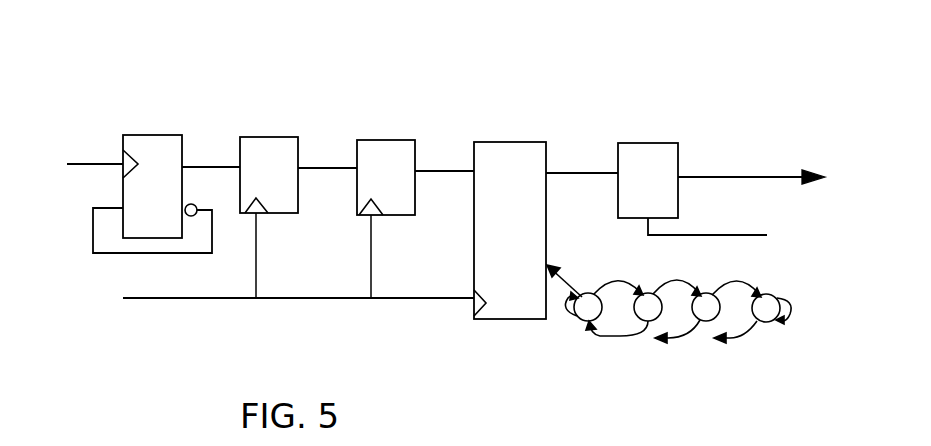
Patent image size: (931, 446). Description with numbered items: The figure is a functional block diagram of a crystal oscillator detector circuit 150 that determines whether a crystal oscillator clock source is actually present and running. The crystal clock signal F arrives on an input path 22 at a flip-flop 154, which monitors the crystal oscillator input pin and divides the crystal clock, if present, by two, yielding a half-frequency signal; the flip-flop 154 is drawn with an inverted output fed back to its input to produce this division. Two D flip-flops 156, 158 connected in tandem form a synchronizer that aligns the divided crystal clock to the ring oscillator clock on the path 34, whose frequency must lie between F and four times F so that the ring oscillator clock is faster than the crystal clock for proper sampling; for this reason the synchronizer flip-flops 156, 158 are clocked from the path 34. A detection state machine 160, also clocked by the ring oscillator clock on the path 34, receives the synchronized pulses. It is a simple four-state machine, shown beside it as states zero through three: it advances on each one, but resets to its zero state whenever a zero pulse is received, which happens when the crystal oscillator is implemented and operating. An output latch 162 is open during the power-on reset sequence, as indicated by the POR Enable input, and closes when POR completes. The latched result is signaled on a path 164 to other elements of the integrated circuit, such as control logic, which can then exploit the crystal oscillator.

The crystal oscillator clock input path 22 is at (85, 164).
The flip-flop 154 is at (172, 99).
The D flip-flop 156 is at (284, 138).
The D flip-flop 158 is at (398, 140).
The detection state machine 160 is at (526, 142).
The output latch 162 is at (658, 143).
The output path 164 is at (766, 177).
The ring oscillator clock path 34 is at (182, 298).
The detector circuit 150 is at (186, 338).